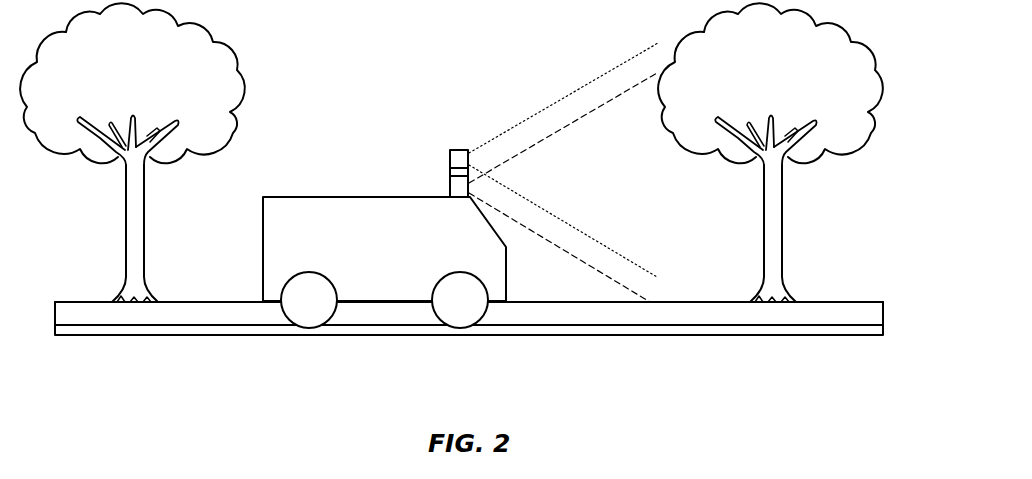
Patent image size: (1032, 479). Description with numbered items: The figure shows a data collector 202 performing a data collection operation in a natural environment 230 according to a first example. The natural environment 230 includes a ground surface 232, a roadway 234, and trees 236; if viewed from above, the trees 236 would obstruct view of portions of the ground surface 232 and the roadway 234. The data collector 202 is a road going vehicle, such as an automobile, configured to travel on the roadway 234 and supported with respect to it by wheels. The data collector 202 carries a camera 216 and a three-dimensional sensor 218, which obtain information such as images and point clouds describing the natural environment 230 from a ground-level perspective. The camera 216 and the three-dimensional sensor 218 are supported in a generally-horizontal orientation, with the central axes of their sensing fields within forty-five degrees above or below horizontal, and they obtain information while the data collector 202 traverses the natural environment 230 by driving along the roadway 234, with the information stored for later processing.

The data collector 202 is at (246, 253).
The camera 216 is at (450, 165).
The three-dimensional sensor 218 is at (450, 190).
The natural environment 230 is at (487, 339).
The ground surface 232 is at (832, 302).
The roadway 234 is at (870, 325).
The trees 236 is at (855, 55).